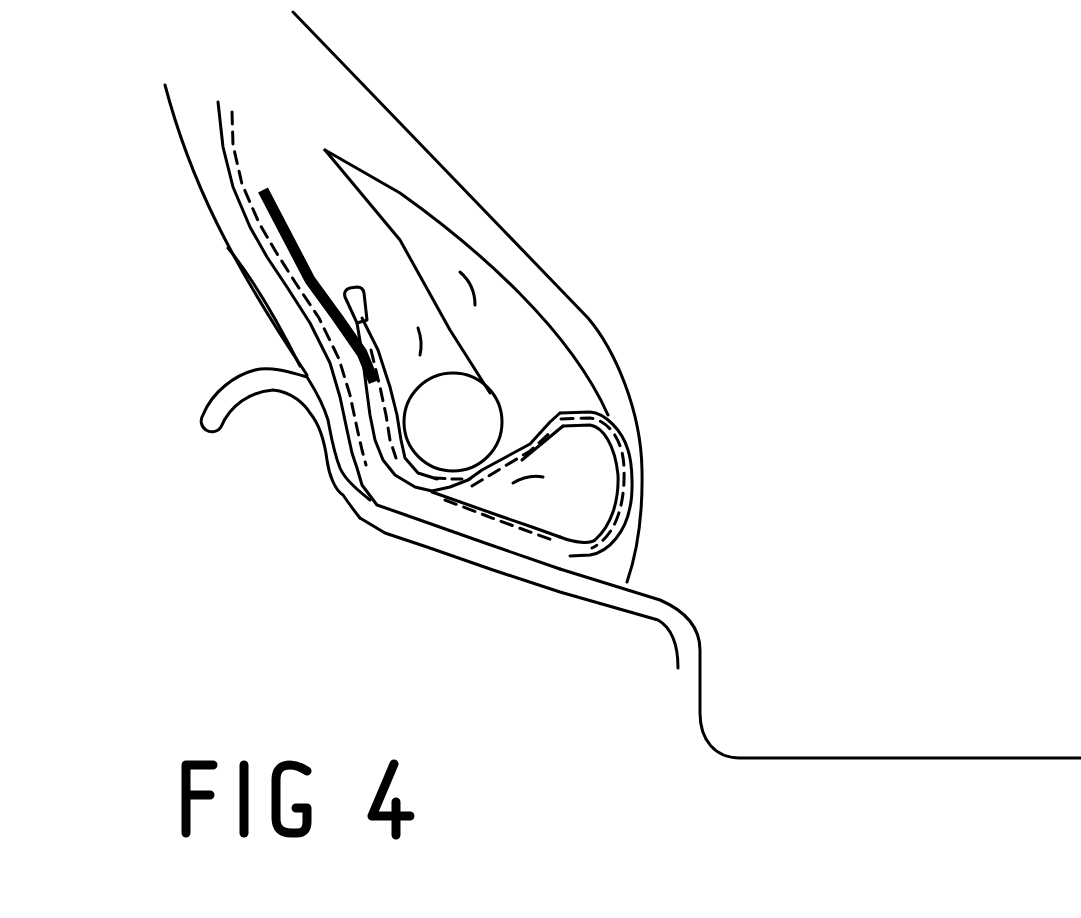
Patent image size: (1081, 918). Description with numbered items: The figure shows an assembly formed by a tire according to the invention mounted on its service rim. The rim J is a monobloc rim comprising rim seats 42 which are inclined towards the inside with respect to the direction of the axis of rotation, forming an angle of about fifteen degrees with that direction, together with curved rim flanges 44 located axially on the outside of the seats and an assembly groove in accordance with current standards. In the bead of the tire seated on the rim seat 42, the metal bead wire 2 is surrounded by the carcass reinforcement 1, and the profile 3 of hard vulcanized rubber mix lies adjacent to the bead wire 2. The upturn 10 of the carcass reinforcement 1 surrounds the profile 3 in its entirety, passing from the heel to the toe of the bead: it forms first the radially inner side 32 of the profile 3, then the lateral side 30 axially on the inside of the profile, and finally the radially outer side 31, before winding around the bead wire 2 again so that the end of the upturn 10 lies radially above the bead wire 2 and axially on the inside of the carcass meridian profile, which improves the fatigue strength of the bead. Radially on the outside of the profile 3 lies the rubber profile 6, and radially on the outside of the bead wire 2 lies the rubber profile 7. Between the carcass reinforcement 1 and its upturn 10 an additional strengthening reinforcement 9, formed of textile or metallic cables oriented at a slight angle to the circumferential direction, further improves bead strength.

The carcass reinforcement 1 is at (325, 150).
The bead wire 2 is at (458, 407).
The profile of rubber mix 3 is at (516, 205).
The profile of rubber mix 6 is at (480, 315).
The profile of rubber mix 7 is at (404, 309).
The additional strengthening reinforcement 9 is at (302, 257).
The upturn of the carcass reinforcement 10 is at (347, 320).
The lateral side of the profile 30 is at (628, 490).
The radially outer side of the profile 31 is at (580, 413).
The radially inner side of the profile 32 is at (530, 530).
The rim seat 42 is at (442, 535).
The rim flange 44 is at (343, 442).
The rim J is at (662, 610).